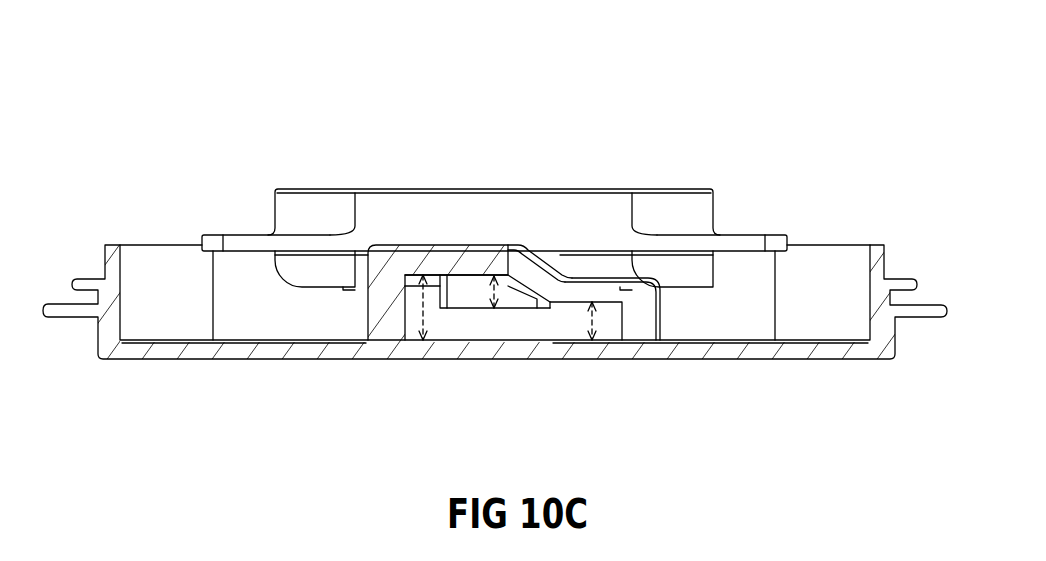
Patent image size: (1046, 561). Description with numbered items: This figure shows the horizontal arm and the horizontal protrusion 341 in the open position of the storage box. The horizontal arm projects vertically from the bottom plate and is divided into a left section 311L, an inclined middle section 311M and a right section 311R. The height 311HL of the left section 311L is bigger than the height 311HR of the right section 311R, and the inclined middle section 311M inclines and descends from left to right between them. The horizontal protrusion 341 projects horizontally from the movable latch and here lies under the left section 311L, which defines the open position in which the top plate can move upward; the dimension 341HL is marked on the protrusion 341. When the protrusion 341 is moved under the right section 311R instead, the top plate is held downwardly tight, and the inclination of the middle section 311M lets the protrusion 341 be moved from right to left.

The horizontal protrusion 341 is at (463, 293).
The left section of the horizontal arm 311L is at (478, 260).
The inclined middle section of the horizontal arm 311M is at (545, 277).
The right section of the horizontal arm 311R is at (608, 292).
The height of the left section of the horizontal arm 311HL is at (423, 308).
The height of protrusion 341HL is at (496, 296).
The height of the right section of the horizontal arm 311HR is at (593, 322).